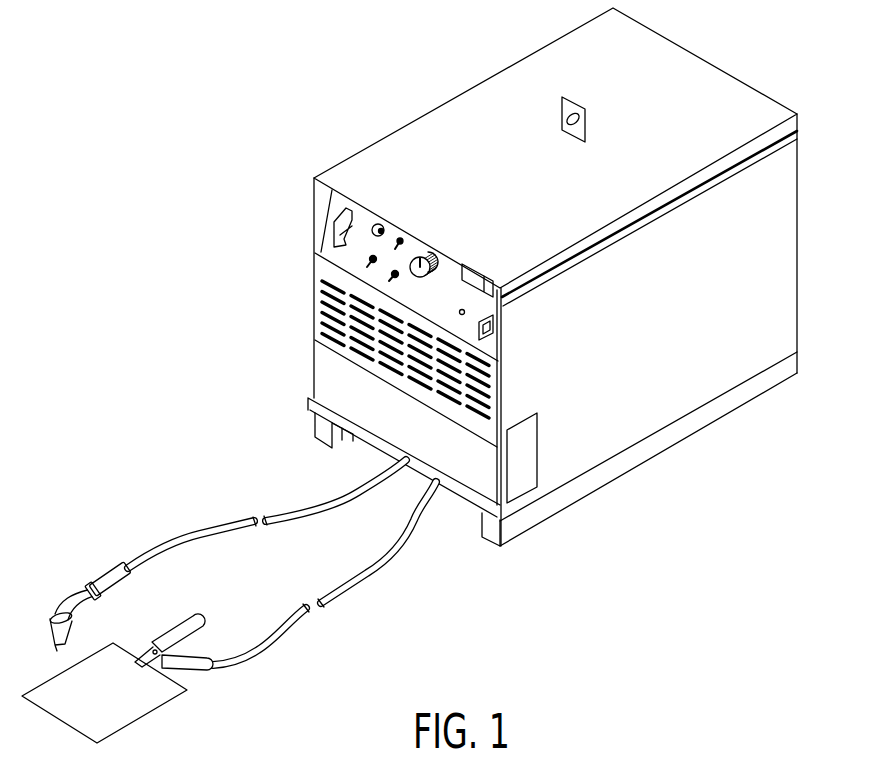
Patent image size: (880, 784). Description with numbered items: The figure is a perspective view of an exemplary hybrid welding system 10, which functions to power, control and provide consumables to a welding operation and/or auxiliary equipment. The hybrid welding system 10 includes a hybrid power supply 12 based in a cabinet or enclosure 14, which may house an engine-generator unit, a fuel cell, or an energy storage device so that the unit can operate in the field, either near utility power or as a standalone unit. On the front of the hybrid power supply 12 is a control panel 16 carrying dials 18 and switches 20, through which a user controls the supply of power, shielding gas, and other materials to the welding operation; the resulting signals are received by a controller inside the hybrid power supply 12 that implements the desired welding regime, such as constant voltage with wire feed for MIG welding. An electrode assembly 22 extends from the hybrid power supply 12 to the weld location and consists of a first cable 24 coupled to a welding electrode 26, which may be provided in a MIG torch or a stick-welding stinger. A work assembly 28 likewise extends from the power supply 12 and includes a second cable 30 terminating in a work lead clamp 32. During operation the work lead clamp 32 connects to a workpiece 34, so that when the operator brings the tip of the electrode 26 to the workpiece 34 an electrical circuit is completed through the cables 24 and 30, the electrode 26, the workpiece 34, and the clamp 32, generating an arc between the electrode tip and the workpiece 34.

The hybrid welding system 10 is at (673, 537).
The hybrid power supply 12 is at (661, 333).
The enclosure 14 is at (547, 207).
The control panel 16 is at (455, 292).
The dials 18 is at (422, 256).
The switches 20 is at (393, 273).
The electrode assembly 22 is at (137, 533).
The first cable 24 is at (193, 532).
The welding electrode 26 is at (62, 593).
The work assembly 28 is at (304, 644).
The second cable 30 is at (361, 583).
The work lead clamp 32 is at (189, 618).
The workpiece 34 is at (115, 706).